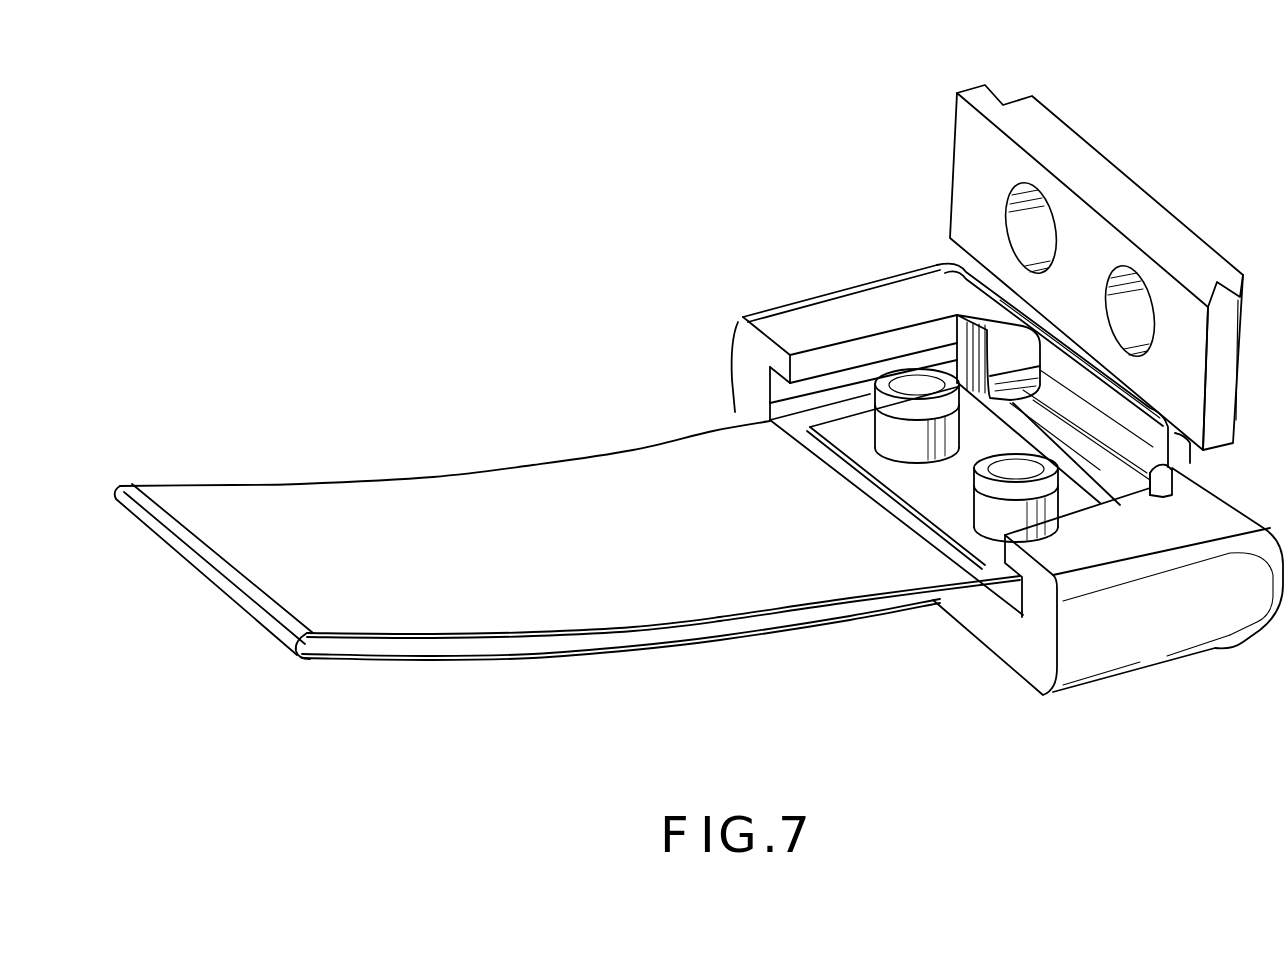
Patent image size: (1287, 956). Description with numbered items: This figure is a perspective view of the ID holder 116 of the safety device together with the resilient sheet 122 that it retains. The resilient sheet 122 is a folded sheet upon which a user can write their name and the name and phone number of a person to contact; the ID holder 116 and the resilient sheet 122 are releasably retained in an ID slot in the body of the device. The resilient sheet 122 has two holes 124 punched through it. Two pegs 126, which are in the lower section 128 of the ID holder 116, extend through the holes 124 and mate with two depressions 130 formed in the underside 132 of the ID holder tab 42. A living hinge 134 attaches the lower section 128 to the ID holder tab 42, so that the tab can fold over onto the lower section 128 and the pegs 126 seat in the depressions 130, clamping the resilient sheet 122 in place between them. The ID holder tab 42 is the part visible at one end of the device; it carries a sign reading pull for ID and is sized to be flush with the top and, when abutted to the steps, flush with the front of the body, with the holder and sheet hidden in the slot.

The ID holder tab 42 is at (1212, 258).
The ID holder 116 is at (1168, 627).
The resilient sheet 122 is at (541, 481).
The holes 124 is at (915, 463).
The pegs 126 is at (1010, 468).
The lower section 128 is at (785, 408).
The depressions 130 is at (1133, 302).
The underside 132 is at (1007, 163).
The living hinge 134 is at (1163, 452).